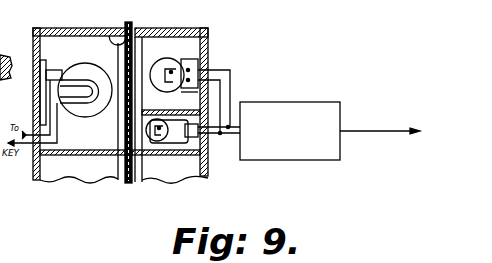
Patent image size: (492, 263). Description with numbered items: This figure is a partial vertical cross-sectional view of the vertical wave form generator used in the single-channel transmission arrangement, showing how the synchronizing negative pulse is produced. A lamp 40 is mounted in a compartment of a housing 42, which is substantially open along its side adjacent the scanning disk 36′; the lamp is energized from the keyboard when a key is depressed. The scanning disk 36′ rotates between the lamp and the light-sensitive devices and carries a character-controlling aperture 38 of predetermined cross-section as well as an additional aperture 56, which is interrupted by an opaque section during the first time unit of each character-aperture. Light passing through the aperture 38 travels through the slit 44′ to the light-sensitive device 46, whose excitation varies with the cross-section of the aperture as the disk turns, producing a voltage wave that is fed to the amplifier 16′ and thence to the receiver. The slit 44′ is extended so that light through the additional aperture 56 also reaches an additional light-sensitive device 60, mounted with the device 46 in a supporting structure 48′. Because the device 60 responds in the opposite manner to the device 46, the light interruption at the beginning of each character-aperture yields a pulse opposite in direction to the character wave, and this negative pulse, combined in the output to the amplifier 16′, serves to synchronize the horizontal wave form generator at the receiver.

The housing 42 is at (72, 28).
The slit 44′ is at (106, 36).
The scanning disk 36′ is at (142, 52).
The aperture 38 is at (170, 66).
The light-sensitive device 46 is at (199, 60).
The lamp 40 is at (93, 63).
The additional aperture 56 is at (118, 132).
The additional light-sensitive device 60 is at (172, 140).
The supporting structure 48′ is at (208, 172).
The amplifier 16′ is at (303, 160).